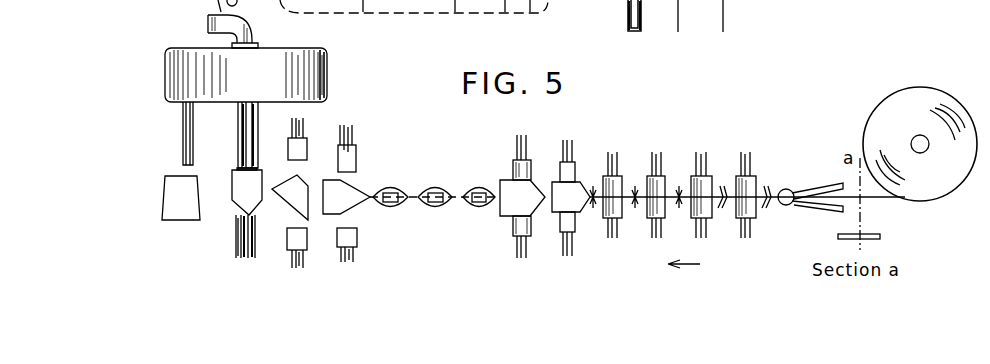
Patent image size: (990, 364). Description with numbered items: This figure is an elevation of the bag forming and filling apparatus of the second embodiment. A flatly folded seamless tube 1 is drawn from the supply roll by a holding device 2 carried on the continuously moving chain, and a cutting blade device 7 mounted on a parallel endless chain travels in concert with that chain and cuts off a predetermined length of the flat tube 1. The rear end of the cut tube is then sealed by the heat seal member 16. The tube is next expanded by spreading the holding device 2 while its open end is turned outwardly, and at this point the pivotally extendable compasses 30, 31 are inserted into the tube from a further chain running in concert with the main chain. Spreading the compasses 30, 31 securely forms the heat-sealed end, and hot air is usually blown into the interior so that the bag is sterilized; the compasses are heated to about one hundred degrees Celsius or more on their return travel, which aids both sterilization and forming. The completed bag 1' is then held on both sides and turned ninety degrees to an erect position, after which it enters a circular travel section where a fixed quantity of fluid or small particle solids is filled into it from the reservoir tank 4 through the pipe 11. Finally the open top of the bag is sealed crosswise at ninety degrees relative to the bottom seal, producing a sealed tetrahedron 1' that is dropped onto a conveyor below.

The reservoir tank 4 is at (255, 75).
The pipe 11 is at (183, 140).
The bag 1' is at (254, 207).
The pivotally extendable compass 30 is at (472, 187).
The pivotally extendable compass 31 is at (472, 208).
The flatly folded seamless tube 1 is at (745, 172).
The holding device 2 is at (622, 214).
The heat seal member 16 is at (636, 208).
The cutting blade device 7 is at (795, 204).